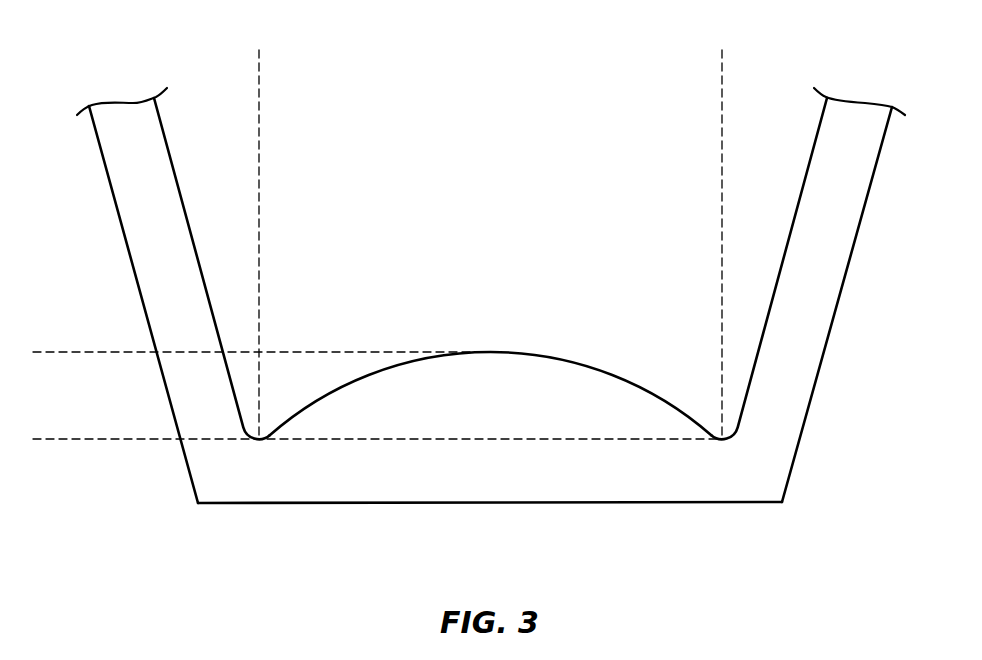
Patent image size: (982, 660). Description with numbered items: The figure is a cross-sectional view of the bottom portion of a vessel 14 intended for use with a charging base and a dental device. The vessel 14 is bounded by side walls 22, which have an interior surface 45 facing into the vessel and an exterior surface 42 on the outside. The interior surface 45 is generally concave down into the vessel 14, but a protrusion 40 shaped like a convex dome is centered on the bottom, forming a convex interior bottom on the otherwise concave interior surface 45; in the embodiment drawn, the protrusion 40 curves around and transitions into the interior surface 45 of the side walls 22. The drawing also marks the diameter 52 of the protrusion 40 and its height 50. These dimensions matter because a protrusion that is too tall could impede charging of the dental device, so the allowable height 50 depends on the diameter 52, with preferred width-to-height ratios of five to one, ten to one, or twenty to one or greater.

The vessel 14 is at (125, 238).
The side walls 22 is at (804, 322).
The protrusion 40 is at (553, 357).
The exterior surface 42 is at (862, 220).
The interior surface 45 is at (819, 127).
The height 50 is at (43, 352).
The diameter 52 is at (722, 60).